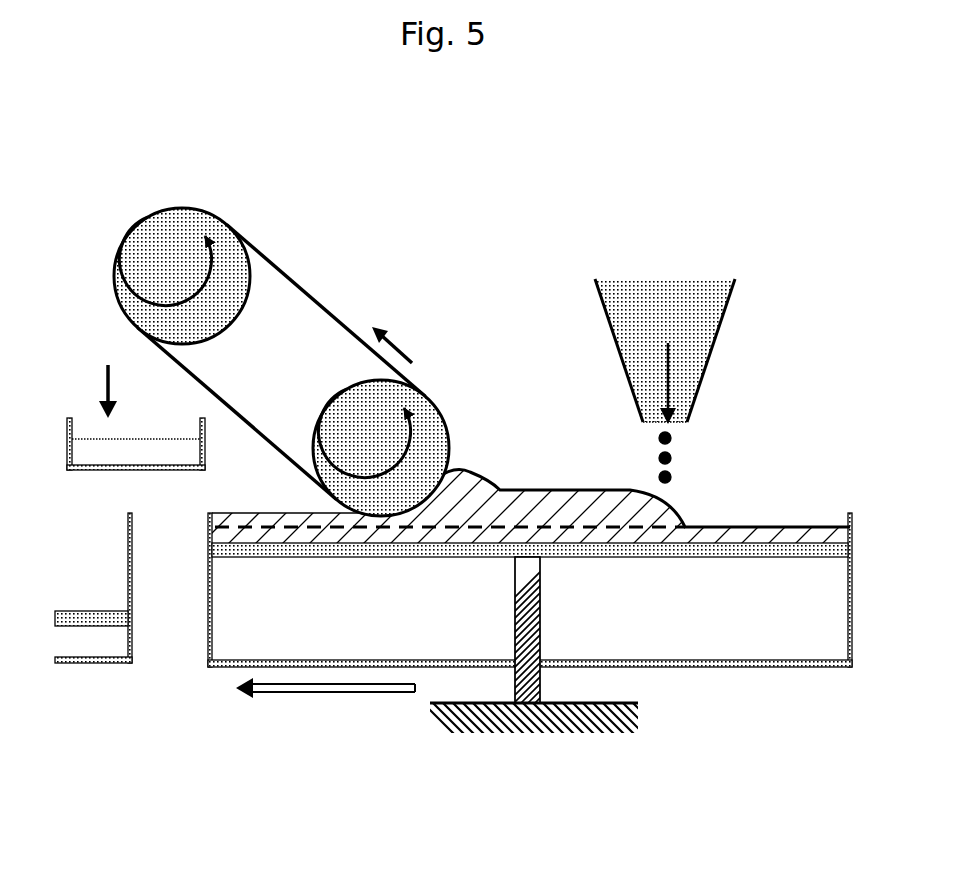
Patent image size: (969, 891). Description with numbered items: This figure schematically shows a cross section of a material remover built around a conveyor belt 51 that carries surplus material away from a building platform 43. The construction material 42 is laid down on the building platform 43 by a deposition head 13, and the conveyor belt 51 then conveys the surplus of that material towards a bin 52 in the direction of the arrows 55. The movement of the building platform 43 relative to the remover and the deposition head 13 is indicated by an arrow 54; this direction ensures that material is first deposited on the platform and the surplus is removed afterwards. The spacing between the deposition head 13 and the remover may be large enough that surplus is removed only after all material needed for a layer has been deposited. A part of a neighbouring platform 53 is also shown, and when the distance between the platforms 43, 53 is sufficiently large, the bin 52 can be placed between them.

The deposition head 13 is at (736, 300).
The construction material 42 is at (672, 468).
The building platform 43 is at (685, 562).
The conveyor belt 51 is at (313, 298).
The bin 52 is at (70, 413).
The neighbouring platform 53 is at (92, 631).
The arrow indicating direction of movement of the building platform 54 is at (305, 700).
The arrows indicating belt conveying direction 55 is at (395, 345).